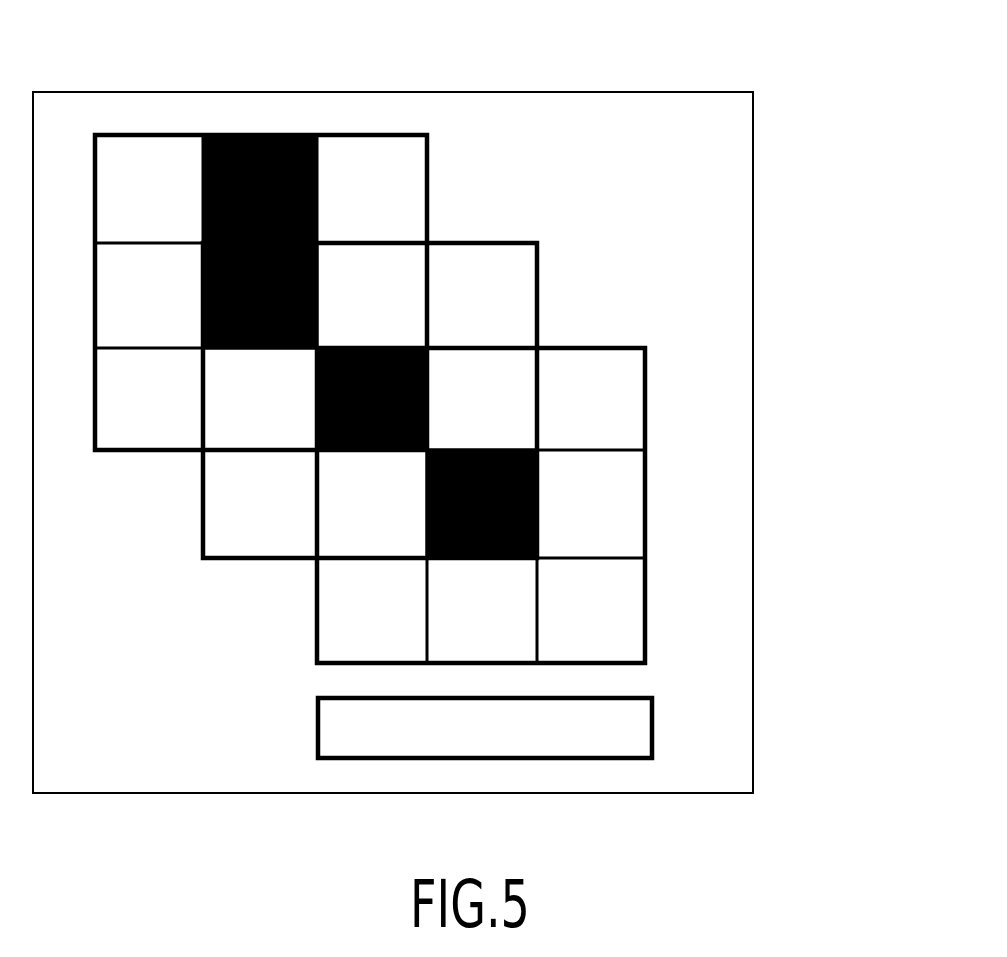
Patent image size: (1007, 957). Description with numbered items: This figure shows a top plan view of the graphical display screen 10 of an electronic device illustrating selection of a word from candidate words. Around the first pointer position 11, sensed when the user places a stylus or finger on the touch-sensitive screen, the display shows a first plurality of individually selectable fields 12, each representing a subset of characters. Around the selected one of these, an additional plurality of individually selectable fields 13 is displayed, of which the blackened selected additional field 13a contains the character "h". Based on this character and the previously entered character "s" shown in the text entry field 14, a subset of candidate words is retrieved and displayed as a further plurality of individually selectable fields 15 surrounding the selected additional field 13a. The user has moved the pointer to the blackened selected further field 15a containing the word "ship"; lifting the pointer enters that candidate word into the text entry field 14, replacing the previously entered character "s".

The graphical display screen 10 is at (688, 438).
The first pointer position 11 is at (537, 545).
The first plurality of individually selectable fields 12 is at (595, 505).
The additional plurality of individually selectable fields 13 is at (546, 368).
The selected additional field 13a is at (318, 290).
The text entry field 14 is at (652, 723).
The further plurality of individually selectable fields 15 is at (484, 229).
The selected further field 15a is at (270, 135).